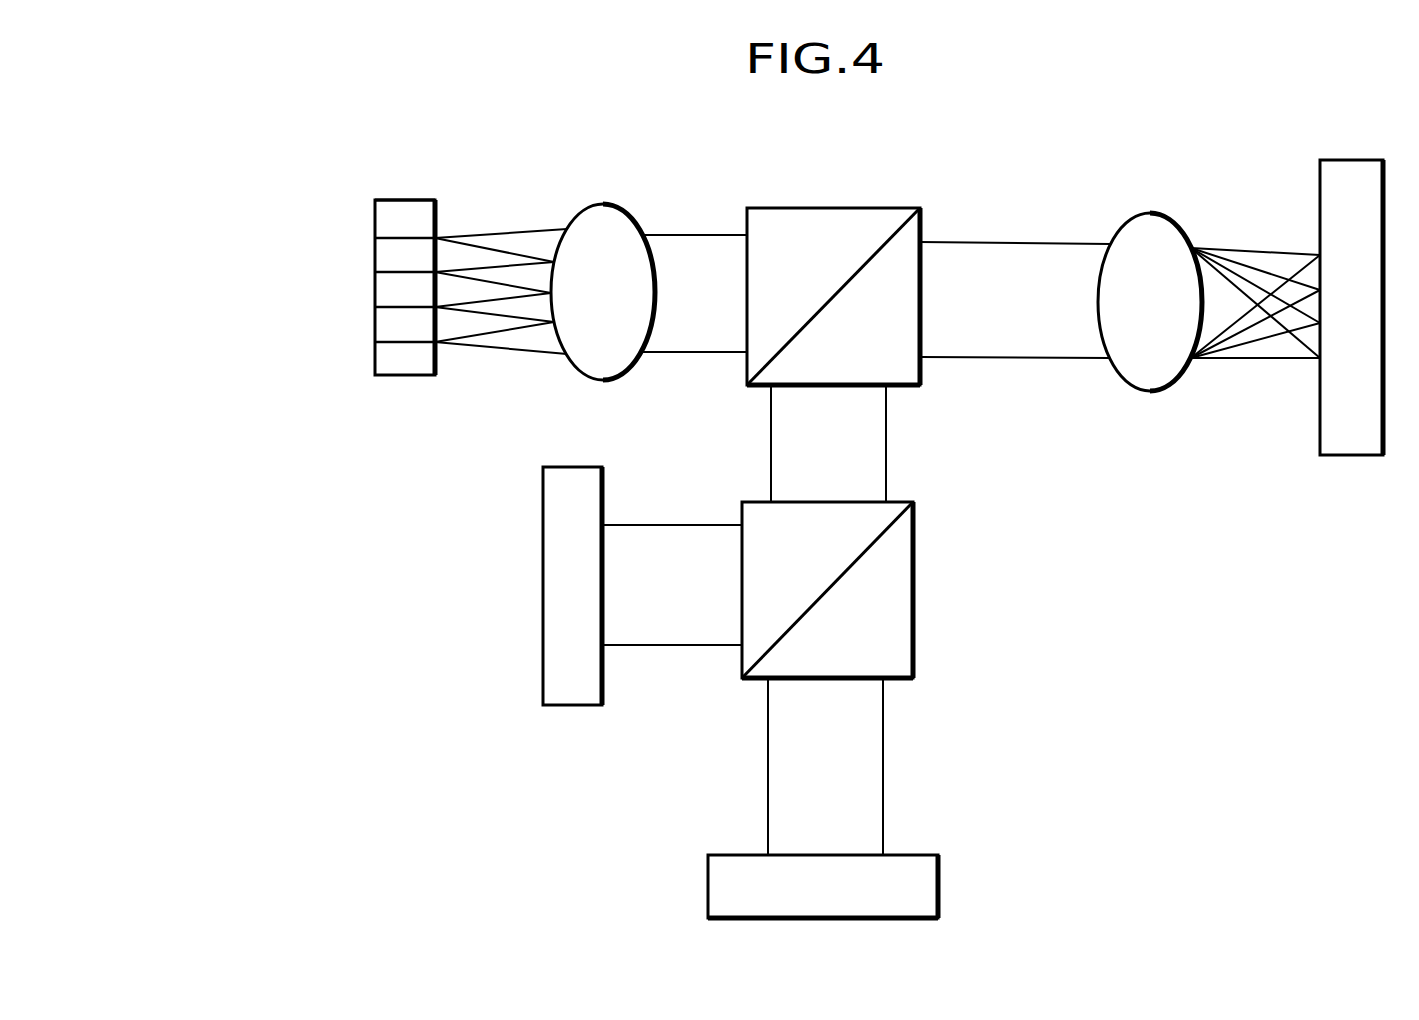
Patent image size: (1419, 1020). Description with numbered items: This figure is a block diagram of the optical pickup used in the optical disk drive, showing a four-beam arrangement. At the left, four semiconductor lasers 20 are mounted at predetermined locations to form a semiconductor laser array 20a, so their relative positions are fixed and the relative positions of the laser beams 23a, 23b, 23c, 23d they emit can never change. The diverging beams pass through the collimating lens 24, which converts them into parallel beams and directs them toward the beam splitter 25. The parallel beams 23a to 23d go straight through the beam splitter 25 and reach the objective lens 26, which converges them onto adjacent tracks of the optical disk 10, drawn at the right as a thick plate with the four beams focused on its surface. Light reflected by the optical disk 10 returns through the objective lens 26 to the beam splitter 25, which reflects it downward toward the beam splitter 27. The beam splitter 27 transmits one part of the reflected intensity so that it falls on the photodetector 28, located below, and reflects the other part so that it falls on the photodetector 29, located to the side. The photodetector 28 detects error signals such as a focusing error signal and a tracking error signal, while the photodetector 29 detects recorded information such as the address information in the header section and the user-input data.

The semiconductor lasers 20 is at (400, 343).
The semiconductor laser array 20a is at (408, 200).
The collimating lens 24 is at (590, 232).
The beam splitter 25 is at (880, 208).
The objective lens 26 is at (1136, 246).
The laser beam 23a is at (1308, 256).
The laser beam 23b is at (1303, 290).
The laser beam 23c is at (1290, 355).
The laser beam 23d is at (1307, 362).
The optical disk 10 is at (1331, 344).
The beam splitter 27 is at (917, 526).
The photodetector 28 is at (907, 855).
The photodetector 29 is at (557, 663).